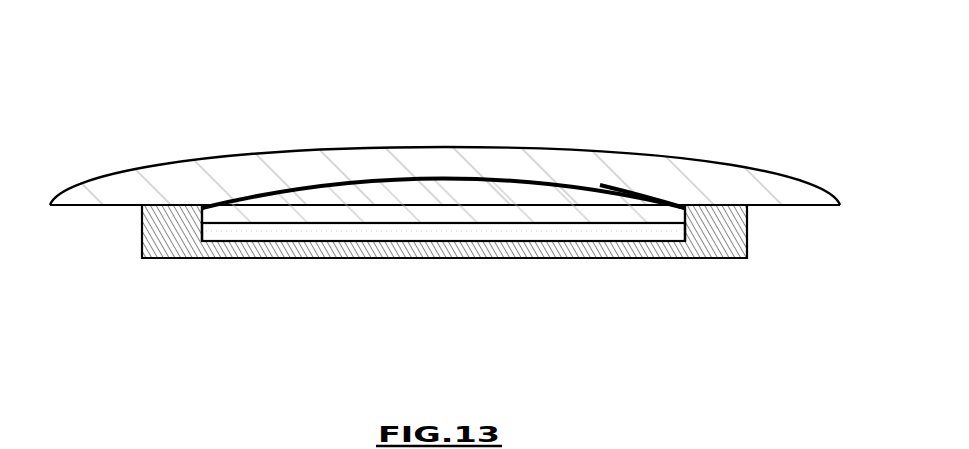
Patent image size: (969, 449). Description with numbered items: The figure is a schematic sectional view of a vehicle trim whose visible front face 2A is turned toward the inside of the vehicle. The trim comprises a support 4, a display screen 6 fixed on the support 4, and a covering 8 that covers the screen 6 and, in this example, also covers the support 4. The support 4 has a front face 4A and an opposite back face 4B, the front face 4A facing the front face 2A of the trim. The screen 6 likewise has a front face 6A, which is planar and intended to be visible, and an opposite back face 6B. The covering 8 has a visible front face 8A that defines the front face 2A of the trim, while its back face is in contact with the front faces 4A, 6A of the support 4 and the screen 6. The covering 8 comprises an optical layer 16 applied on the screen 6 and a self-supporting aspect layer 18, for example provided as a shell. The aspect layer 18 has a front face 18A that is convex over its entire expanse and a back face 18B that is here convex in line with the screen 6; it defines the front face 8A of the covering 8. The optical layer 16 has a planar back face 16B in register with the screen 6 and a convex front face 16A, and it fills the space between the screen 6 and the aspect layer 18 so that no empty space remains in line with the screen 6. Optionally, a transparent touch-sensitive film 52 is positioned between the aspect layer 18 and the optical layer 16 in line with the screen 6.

The front face of the trim 2A is at (445, 117).
The support 4 is at (250, 249).
The front face of the support 4A is at (176, 204).
The back face of the support 4B is at (207, 260).
The display screen 6 is at (437, 233).
The front face of the screen 6A is at (410, 222).
The back face of the screen 6B is at (505, 243).
The covering 8 is at (231, 148).
The front face of the covering 8A is at (445, 117).
The optical layer 16 is at (517, 198).
The front face of the optical layer 16A is at (575, 182).
The back face of the optical layer 16B is at (605, 224).
The aspect layer 18 is at (445, 118).
The front face of the aspect layer 18A is at (448, 147).
The back face of the aspect layer 18B is at (346, 200).
The touch-sensitive film 52 is at (648, 203).